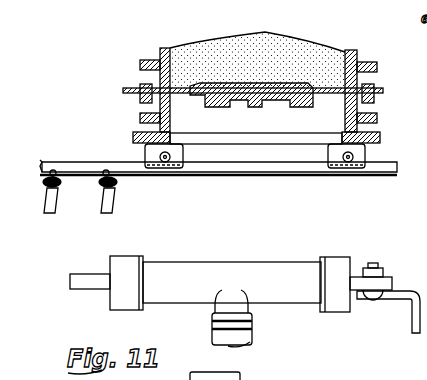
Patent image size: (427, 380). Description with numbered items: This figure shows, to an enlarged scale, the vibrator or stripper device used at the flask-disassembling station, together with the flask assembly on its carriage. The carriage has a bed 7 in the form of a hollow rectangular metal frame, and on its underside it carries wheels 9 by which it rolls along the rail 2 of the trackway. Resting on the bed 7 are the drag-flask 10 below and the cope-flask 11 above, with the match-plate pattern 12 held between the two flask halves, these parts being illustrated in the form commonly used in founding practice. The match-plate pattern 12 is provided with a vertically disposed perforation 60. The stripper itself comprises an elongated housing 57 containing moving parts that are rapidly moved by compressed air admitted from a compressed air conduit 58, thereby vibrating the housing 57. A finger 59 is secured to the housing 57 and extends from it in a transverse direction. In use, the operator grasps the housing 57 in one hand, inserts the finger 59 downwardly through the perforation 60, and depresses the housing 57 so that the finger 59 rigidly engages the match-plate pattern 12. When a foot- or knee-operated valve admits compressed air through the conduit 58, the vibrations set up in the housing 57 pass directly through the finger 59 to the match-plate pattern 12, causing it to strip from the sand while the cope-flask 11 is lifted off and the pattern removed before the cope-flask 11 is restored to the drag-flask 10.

The drag-flask 10 is at (160, 50).
The cope-flask 11 is at (153, 116).
The perforation 60 is at (133, 86).
The match-plate pattern 12 is at (245, 100).
The bed 7 is at (372, 134).
The wheels 9 is at (355, 157).
The rail 2 is at (380, 176).
The housing 57 is at (285, 265).
The compressed air conduit 58 is at (250, 339).
The finger 59 is at (413, 323).